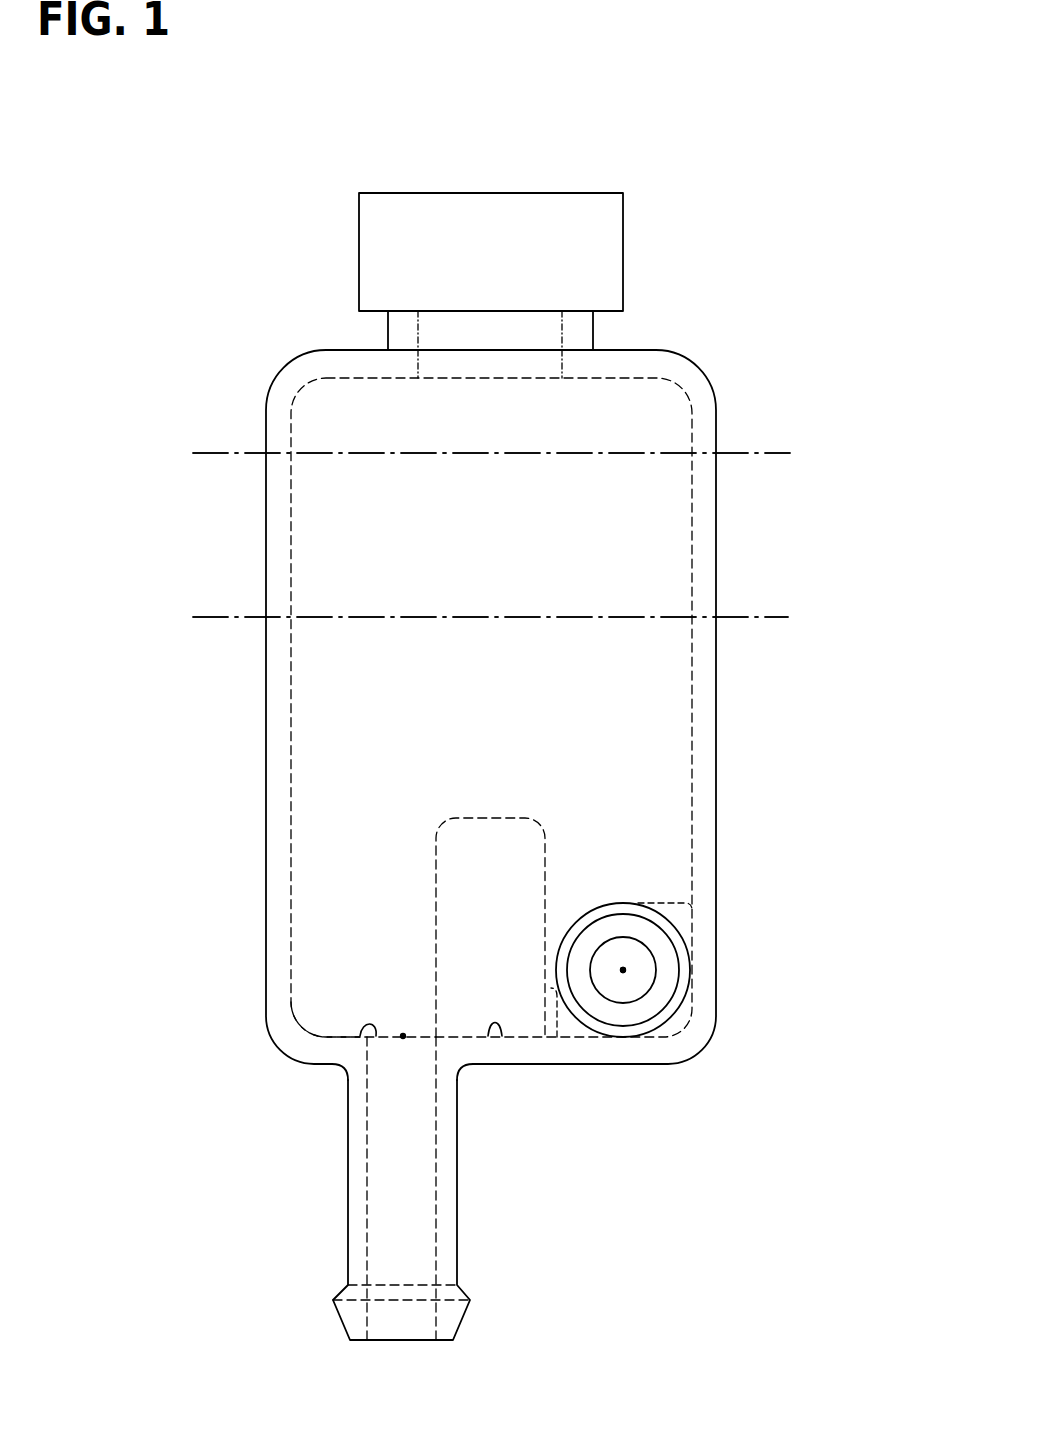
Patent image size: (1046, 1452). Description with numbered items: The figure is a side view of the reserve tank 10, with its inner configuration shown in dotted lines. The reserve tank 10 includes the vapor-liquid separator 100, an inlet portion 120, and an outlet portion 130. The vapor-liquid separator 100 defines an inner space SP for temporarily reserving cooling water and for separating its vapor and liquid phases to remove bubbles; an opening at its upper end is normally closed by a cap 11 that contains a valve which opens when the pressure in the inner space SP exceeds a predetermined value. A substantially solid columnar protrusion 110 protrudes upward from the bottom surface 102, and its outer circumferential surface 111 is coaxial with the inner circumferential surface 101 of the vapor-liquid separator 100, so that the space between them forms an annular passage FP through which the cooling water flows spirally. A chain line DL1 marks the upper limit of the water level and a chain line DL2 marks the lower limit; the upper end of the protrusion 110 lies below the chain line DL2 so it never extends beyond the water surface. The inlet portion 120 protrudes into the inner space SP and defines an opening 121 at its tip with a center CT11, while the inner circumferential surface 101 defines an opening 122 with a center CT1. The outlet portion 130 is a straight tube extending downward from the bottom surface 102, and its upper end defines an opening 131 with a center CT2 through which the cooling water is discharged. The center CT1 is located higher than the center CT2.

The reserve tank 10 is at (800, 150).
The cap 11 is at (527, 192).
The vapor-liquid separator 100 is at (716, 525).
The inner circumferential surface 101 is at (692, 732).
The bottom surface 102 is at (502, 1036).
The protrusion 110 is at (525, 863).
The outer circumferential surface 111 is at (550, 890).
The inlet portion 120 is at (668, 980).
The opening 121 is at (642, 958).
The opening 122 is at (623, 970).
The outlet portion 130 is at (460, 1192).
The opening 131 is at (360, 1036).
The inner space SP is at (665, 663).
The annular passage FP is at (325, 955).
The chain line DL1 is at (210, 452).
The chain line DL2 is at (210, 615).
The center CT1 is at (623, 970).
The center CT11 is at (623, 970).
The center CT2 is at (403, 1036).